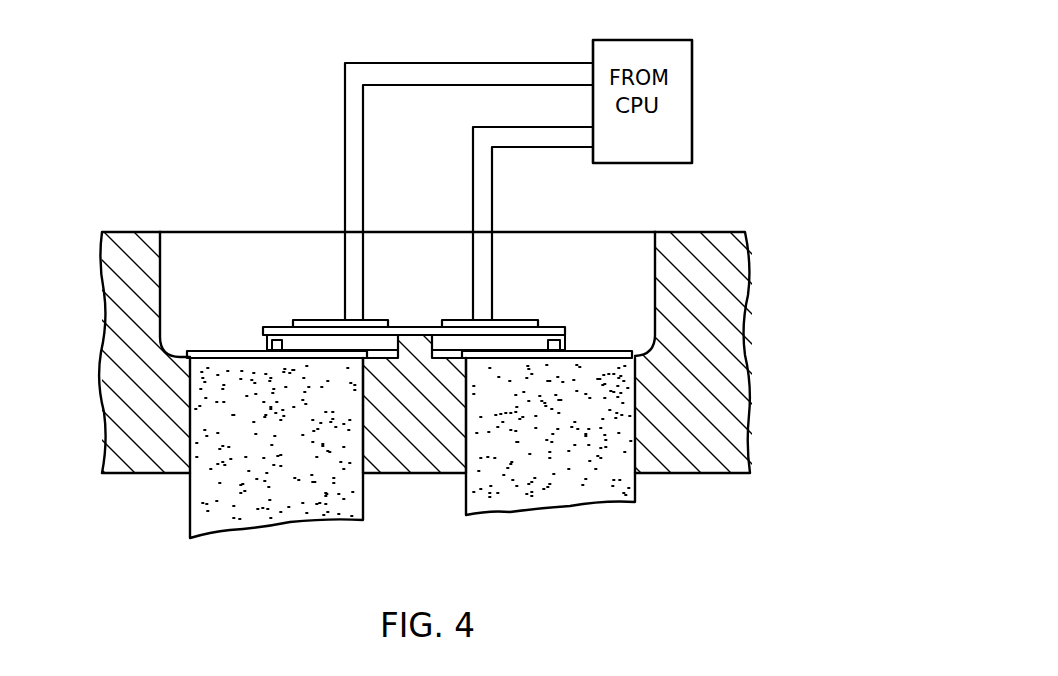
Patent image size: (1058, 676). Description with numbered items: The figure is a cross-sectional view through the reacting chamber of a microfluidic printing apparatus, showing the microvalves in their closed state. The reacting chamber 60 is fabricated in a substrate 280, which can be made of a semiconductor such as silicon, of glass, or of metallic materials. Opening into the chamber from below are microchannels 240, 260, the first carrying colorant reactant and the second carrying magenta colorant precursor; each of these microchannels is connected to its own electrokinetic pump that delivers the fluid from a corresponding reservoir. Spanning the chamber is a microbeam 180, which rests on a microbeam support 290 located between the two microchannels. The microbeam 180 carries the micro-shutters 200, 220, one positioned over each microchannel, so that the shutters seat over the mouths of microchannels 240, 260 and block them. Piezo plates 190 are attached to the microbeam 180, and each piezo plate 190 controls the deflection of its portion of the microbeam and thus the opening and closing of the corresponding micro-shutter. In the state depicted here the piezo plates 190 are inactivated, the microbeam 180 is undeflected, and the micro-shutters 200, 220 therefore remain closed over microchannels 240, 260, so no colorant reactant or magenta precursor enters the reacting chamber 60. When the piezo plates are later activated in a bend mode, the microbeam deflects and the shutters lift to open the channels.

The reacting chamber 60 is at (190, 240).
The microbeam 180 is at (530, 317).
The piezo plate 190 is at (307, 320).
The micro-shutter 200 is at (232, 352).
The micro-shutter 220 is at (605, 347).
The microchannel 240 is at (287, 508).
The microchannel 260 is at (592, 487).
The substrate 280 is at (708, 455).
The microbeam support 290 is at (407, 343).